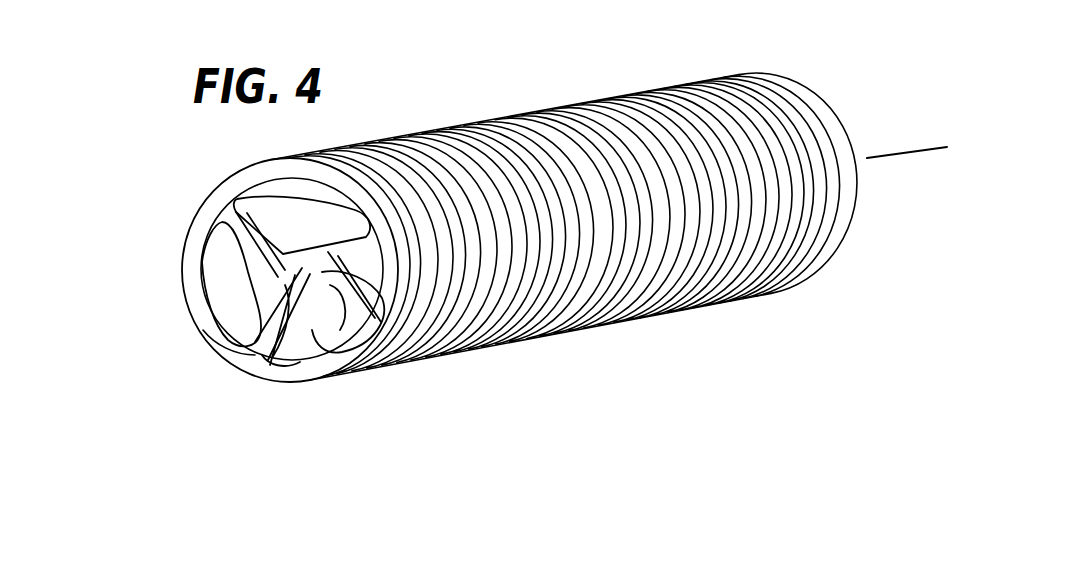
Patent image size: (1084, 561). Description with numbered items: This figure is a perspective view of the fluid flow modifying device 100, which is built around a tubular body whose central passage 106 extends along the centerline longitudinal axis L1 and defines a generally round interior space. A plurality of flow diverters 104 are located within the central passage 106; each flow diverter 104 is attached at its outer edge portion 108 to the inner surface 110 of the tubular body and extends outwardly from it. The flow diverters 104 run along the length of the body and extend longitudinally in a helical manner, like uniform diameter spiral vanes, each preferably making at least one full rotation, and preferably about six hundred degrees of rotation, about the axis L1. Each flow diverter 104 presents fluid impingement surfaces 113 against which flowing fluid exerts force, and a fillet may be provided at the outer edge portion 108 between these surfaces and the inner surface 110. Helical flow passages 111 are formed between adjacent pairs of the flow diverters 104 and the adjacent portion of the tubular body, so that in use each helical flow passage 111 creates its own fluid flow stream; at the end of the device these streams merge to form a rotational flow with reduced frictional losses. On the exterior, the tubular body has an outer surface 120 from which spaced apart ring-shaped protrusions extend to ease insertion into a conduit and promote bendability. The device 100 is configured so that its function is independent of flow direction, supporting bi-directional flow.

The fluid flow modifying device 100 is at (519, 204).
The flow diverters 104 is at (245, 245).
The central passage 106 is at (212, 315).
The outer edge portion 108 is at (272, 350).
The inner surface 110 is at (220, 293).
The helical flow passages 111 is at (270, 327).
The fluid impingement surfaces 113 is at (357, 263).
The outer surface 120 is at (652, 237).
The centerline longitudinal axis L1 is at (905, 152).